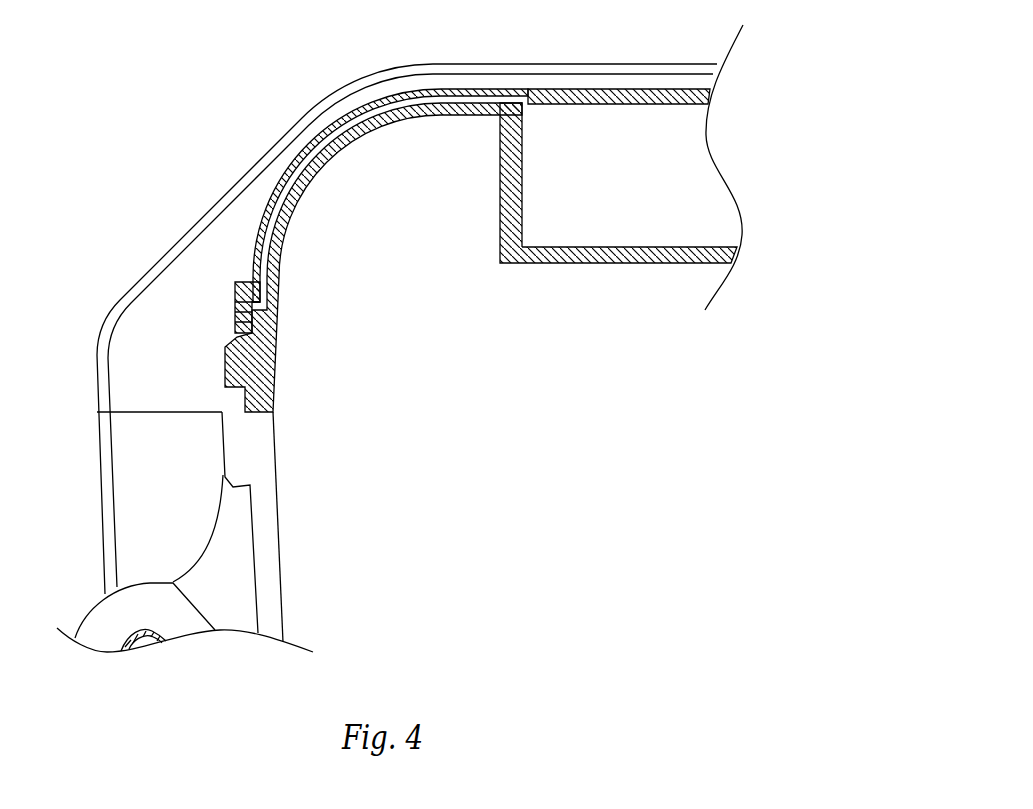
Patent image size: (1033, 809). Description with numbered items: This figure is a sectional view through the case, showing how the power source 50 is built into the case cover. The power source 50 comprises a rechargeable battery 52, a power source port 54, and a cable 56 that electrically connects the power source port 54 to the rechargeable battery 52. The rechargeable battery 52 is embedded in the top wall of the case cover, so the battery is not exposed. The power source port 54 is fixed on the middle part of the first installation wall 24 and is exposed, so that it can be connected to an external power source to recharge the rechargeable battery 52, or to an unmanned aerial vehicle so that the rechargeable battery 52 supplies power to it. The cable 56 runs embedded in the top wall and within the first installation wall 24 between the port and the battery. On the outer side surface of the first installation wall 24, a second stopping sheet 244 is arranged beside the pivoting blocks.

The first installation wall 24 is at (282, 335).
The power source 50 is at (441, 165).
The rechargeable battery 52 is at (613, 265).
The power source port 54 is at (240, 287).
The cable 56 is at (332, 133).
The second stopping sheet 244 is at (203, 210).